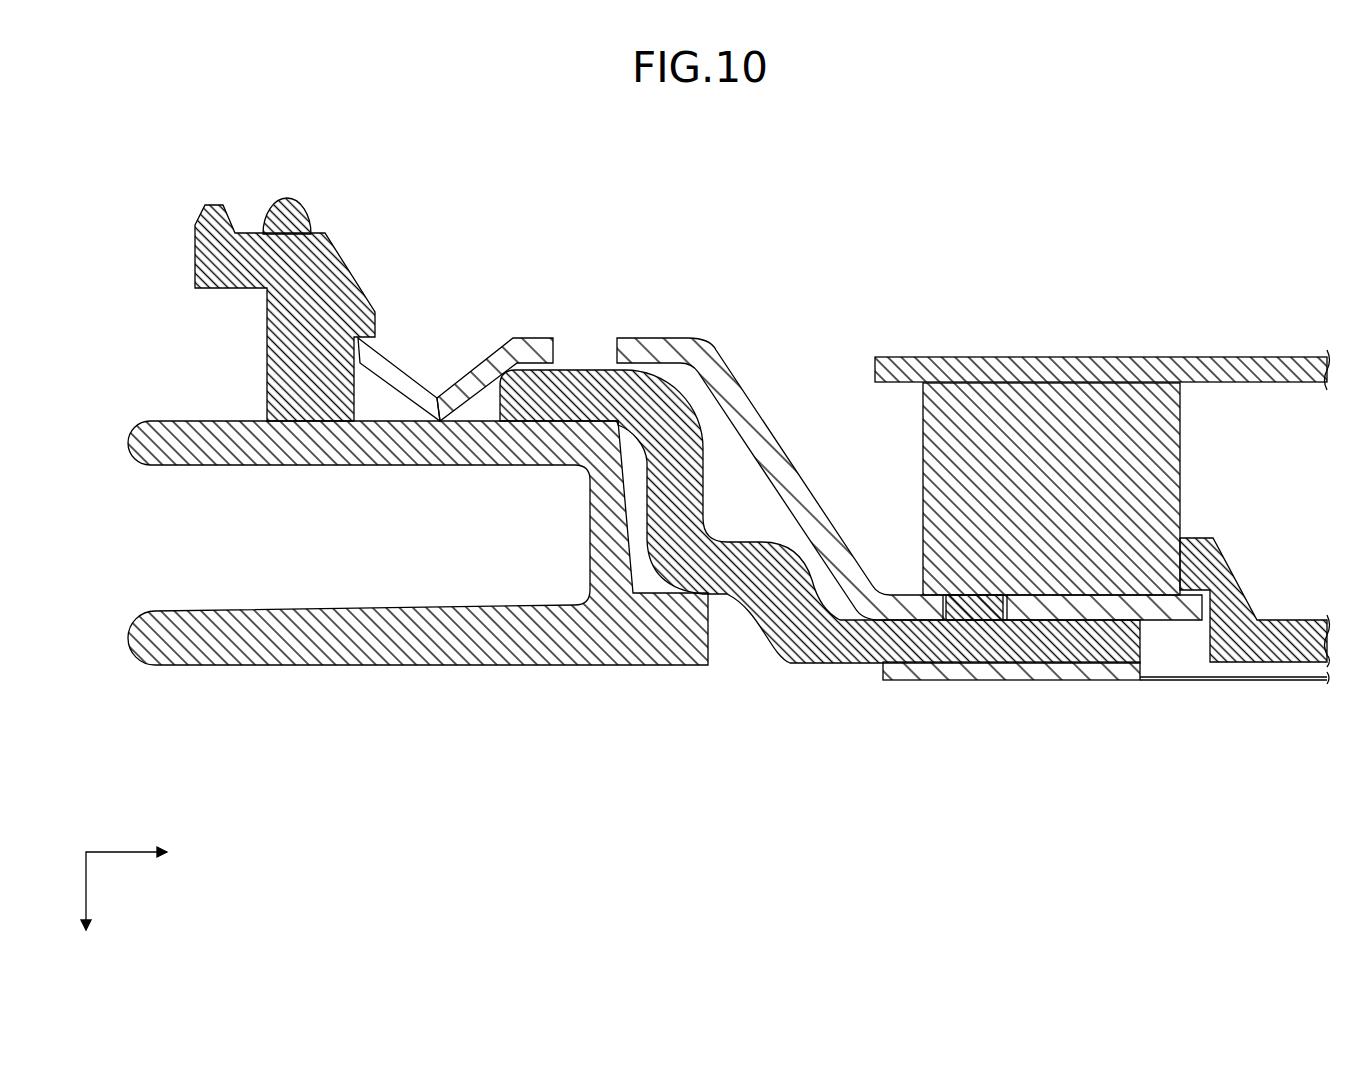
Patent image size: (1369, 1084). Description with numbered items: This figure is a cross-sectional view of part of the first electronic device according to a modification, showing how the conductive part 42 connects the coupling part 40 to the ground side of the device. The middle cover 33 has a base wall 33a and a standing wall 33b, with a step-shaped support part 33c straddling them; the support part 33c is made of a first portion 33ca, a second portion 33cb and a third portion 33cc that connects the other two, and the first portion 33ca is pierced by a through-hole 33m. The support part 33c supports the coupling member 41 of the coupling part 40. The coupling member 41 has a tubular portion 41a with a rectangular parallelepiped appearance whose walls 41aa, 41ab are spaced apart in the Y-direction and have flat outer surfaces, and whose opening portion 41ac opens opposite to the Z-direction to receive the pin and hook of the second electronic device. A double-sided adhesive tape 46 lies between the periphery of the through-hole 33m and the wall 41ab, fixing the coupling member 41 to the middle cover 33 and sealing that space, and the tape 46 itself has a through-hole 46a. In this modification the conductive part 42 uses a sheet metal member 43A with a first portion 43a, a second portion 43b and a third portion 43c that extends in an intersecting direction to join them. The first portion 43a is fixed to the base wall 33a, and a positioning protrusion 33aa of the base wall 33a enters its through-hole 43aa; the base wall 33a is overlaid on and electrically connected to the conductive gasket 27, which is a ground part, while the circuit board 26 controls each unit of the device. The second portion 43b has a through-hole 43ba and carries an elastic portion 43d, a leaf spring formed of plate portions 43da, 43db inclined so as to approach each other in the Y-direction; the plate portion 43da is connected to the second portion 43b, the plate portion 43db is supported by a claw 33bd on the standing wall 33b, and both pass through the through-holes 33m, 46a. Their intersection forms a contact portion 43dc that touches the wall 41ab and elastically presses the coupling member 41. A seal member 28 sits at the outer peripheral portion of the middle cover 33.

The circuit board 26 is at (1250, 356).
The conductive gasket 27 is at (1181, 440).
The seal member 28 is at (283, 198).
The middle cover 33 is at (703, 539).
The base wall 33a is at (902, 585).
The positioning protrusion 33aa is at (970, 619).
The standing wall 33b is at (260, 361).
The claw 33bd is at (260, 361).
The support part 33c is at (902, 585).
The first portion 33ca is at (526, 422).
The second portion 33cb is at (807, 577).
The third portion 33cc is at (807, 577).
The through-hole 33m is at (266, 316).
The coupling part 40 is at (390, 574).
The coupling member 41 is at (390, 574).
The tubular portion 41a is at (390, 574).
The wall 41aa is at (390, 574).
The wall 41ab is at (390, 574).
The opening portion 41ac is at (160, 528).
The conductive part 42 is at (937, 474).
The sheet metal member 43A is at (937, 474).
The first portion 43a is at (937, 474).
The through-hole 43aa is at (931, 621).
The second portion 43b is at (937, 474).
The through-hole 43ba is at (645, 334).
The third portion 43c is at (937, 474).
The elastic portion 43d is at (455, 444).
The plate portion 43da is at (458, 372).
The plate portion 43db is at (410, 382).
The contact portion 43dc is at (455, 444).
The double-sided adhesive tape 46 is at (266, 418).
The through-hole 46a is at (498, 424).